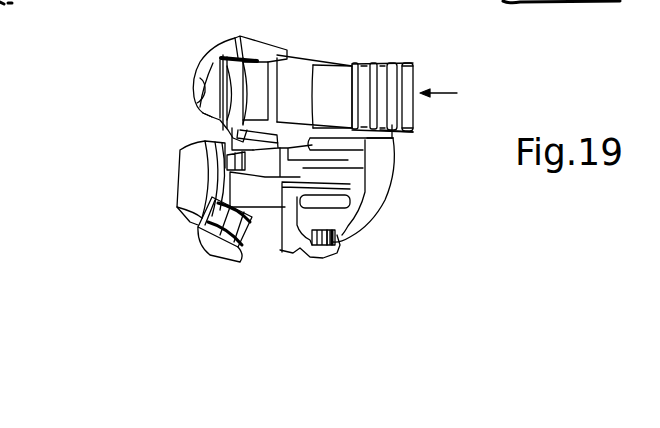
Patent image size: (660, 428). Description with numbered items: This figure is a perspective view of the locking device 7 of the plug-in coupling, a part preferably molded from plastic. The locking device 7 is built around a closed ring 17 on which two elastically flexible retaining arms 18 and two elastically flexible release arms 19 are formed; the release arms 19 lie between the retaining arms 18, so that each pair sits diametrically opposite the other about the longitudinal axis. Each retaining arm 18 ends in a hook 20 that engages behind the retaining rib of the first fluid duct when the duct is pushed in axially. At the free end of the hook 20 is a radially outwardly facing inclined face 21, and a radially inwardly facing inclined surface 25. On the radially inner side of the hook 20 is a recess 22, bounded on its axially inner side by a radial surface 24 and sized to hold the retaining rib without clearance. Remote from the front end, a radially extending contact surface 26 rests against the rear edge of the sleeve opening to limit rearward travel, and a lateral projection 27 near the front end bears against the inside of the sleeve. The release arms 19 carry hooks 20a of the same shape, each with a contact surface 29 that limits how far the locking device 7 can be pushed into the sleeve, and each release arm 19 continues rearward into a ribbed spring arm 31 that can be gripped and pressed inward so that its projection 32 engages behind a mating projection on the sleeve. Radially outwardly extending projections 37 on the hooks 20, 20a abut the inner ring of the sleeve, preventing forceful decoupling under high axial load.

The locking device 7 is at (445, 96).
The closed ring 17 is at (380, 175).
The retaining arm 18 is at (313, 213).
The release arm 19 is at (343, 147).
The hook 20 is at (262, 52).
The hook 20a is at (303, 90).
The inclined face 21 is at (220, 48).
The recess 22 is at (272, 150).
The radial surface 24 is at (225, 165).
The inclined surface 25 is at (208, 83).
The contact surface 26 is at (288, 57).
The lateral projection 27 is at (203, 117).
The contact surface 29 is at (317, 137).
The spring arm 31 is at (408, 78).
The projection 32 is at (413, 140).
The radially outwardly extending projection 37 is at (213, 67).